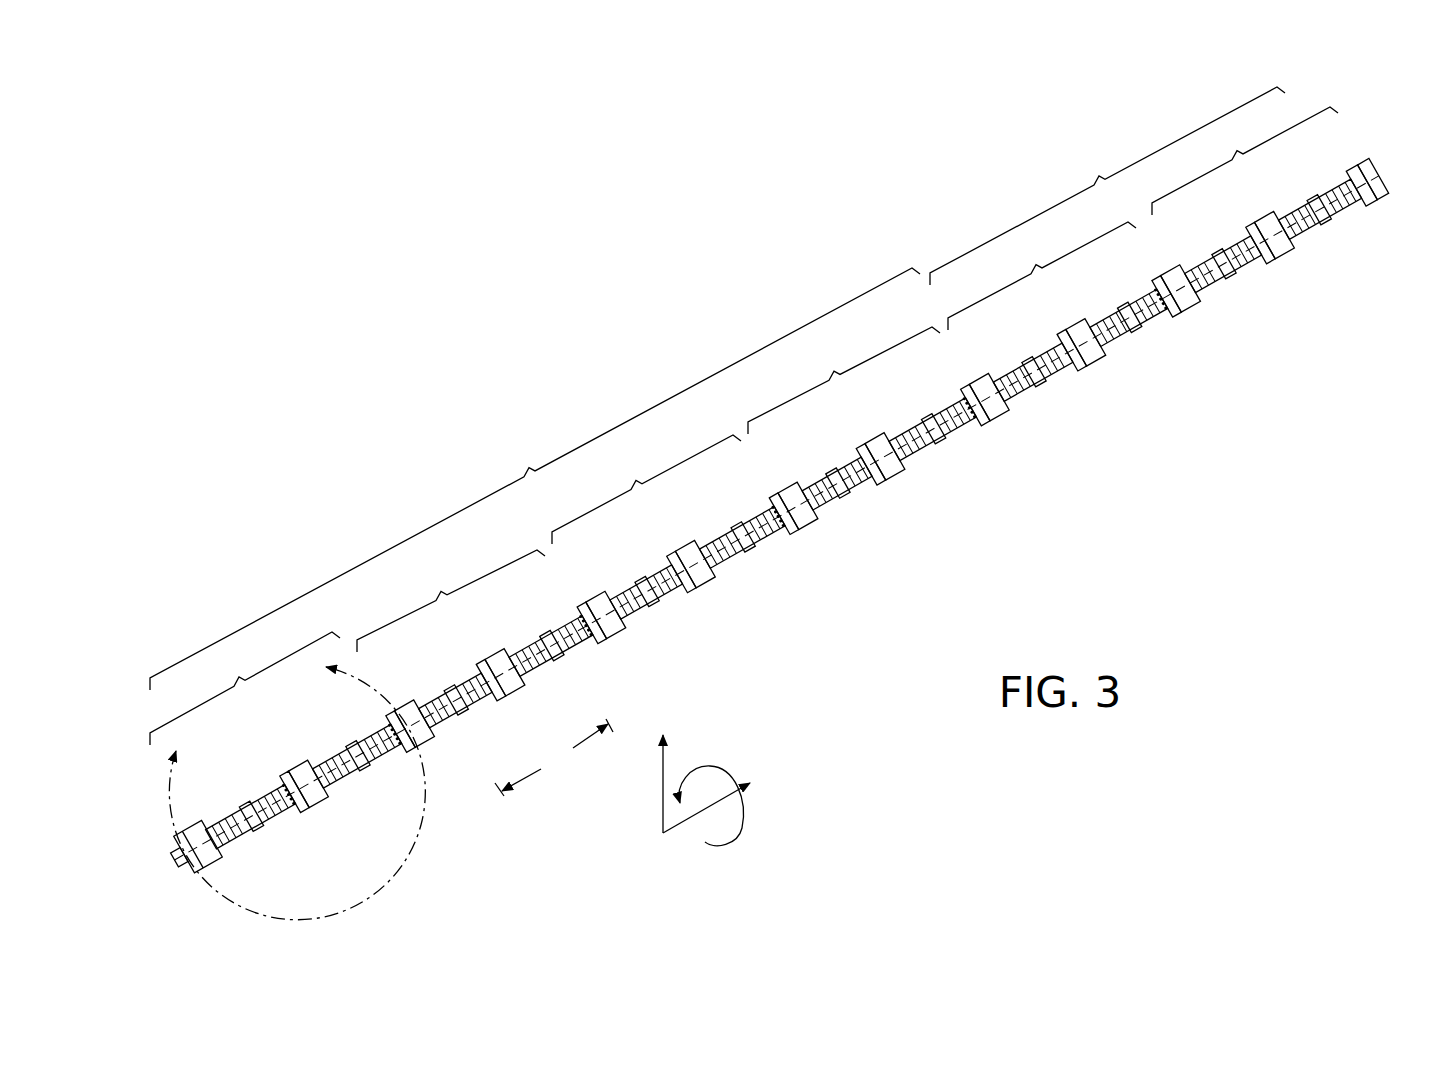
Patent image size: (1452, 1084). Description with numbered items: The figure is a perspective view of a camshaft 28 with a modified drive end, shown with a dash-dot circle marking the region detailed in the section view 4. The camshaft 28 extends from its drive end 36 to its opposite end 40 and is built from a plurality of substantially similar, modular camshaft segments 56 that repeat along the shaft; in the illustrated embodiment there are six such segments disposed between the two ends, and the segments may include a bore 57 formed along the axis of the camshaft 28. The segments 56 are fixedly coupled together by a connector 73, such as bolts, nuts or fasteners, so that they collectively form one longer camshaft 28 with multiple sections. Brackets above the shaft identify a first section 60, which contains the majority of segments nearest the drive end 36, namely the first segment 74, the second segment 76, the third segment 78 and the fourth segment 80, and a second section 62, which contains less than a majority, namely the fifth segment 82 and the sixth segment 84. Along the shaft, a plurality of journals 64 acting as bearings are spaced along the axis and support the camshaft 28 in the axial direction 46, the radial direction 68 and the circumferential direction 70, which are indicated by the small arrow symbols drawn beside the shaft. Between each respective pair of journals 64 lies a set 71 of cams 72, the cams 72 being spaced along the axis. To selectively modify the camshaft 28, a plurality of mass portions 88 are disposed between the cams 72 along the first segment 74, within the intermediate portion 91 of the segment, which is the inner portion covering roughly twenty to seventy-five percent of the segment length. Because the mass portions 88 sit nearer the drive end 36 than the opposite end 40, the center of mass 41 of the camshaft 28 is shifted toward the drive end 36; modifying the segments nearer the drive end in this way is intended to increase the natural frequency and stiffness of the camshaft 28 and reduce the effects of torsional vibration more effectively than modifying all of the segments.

The section line of FIG. 4 is at (289, 780).
The camshaft 28 is at (807, 513).
The drive end 36 is at (200, 812).
The opposite end 40 is at (1358, 158).
The center of mass 41 is at (800, 687).
The axial direction 46 is at (688, 823).
The camshaft segment 56 is at (1255, 206).
The bore 57 is at (1387, 176).
The first section 60 is at (535, 479).
The second section 62 is at (1107, 186).
The journal 64 is at (1282, 257).
The radial direction 68 is at (663, 790).
The circumferential direction 70 is at (718, 770).
The set of cams 71 is at (884, 550).
The cam 72 is at (1216, 252).
The connector 73 is at (590, 616).
The first segment 74 is at (245, 688).
The second segment 76 is at (451, 601).
The third segment 78 is at (646, 489).
The fourth segment 80 is at (844, 380).
The fifth segment 82 is at (1042, 276).
The sixth segment 84 is at (1245, 161).
The mass portion 88 is at (862, 457).
The intermediate portion 91 is at (554, 757).